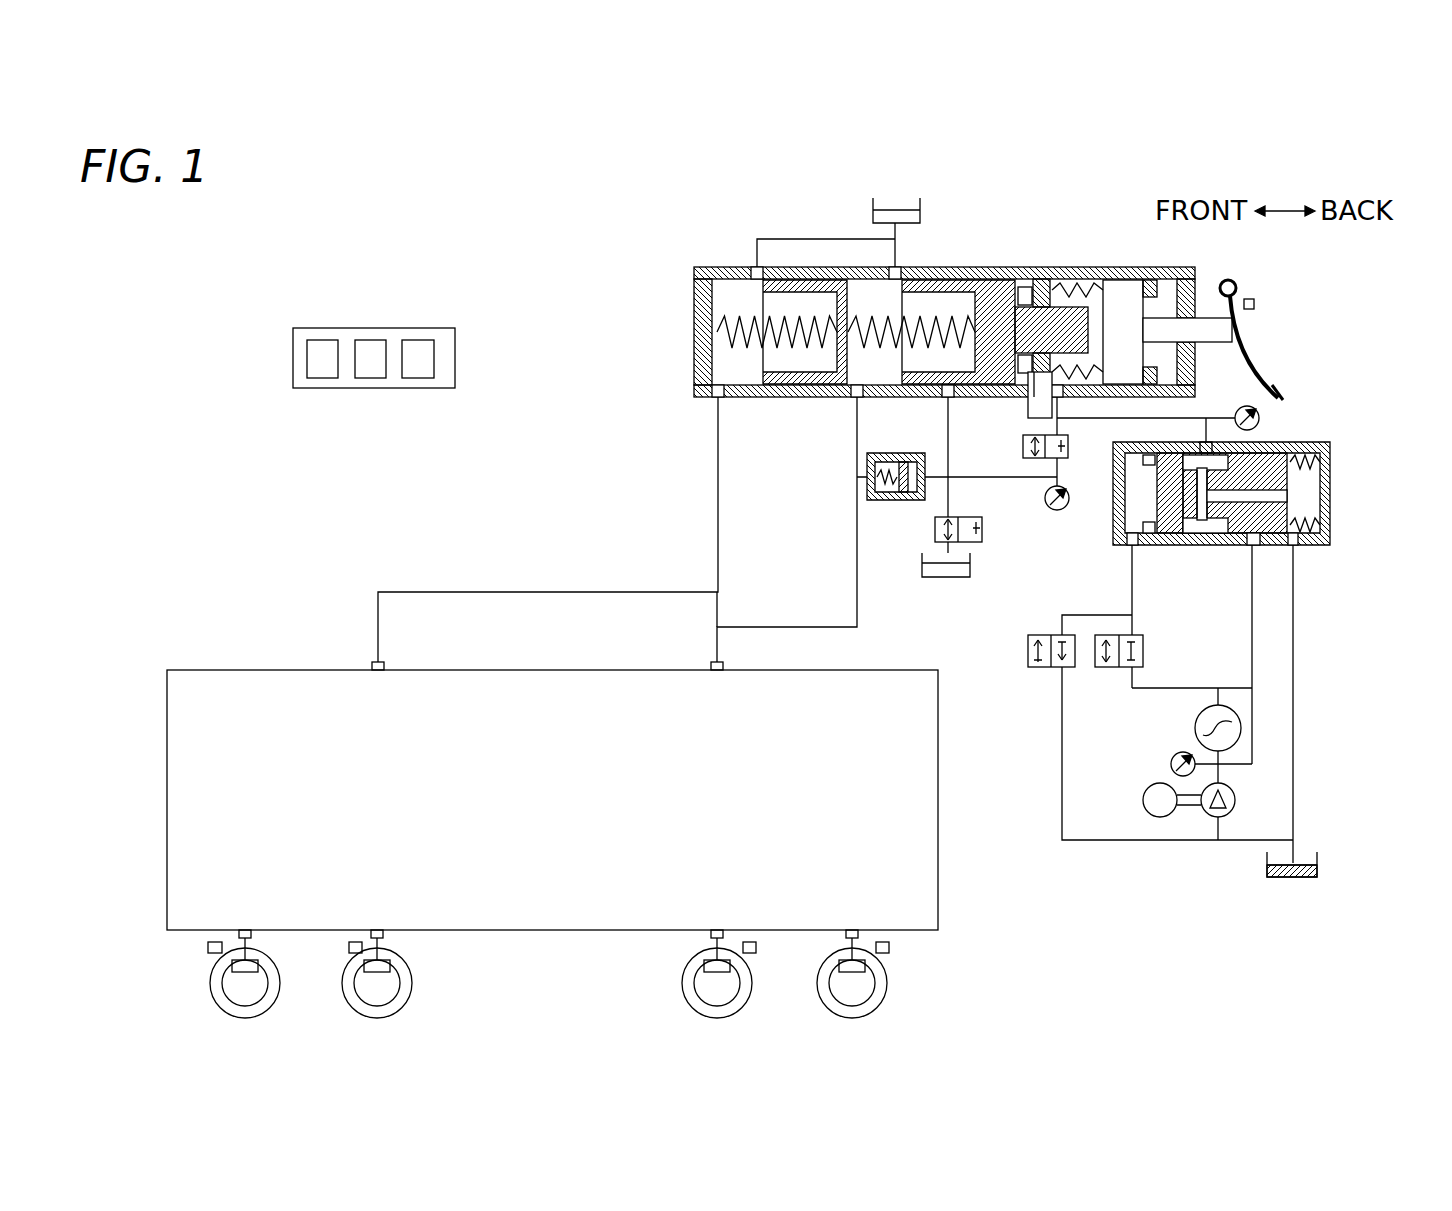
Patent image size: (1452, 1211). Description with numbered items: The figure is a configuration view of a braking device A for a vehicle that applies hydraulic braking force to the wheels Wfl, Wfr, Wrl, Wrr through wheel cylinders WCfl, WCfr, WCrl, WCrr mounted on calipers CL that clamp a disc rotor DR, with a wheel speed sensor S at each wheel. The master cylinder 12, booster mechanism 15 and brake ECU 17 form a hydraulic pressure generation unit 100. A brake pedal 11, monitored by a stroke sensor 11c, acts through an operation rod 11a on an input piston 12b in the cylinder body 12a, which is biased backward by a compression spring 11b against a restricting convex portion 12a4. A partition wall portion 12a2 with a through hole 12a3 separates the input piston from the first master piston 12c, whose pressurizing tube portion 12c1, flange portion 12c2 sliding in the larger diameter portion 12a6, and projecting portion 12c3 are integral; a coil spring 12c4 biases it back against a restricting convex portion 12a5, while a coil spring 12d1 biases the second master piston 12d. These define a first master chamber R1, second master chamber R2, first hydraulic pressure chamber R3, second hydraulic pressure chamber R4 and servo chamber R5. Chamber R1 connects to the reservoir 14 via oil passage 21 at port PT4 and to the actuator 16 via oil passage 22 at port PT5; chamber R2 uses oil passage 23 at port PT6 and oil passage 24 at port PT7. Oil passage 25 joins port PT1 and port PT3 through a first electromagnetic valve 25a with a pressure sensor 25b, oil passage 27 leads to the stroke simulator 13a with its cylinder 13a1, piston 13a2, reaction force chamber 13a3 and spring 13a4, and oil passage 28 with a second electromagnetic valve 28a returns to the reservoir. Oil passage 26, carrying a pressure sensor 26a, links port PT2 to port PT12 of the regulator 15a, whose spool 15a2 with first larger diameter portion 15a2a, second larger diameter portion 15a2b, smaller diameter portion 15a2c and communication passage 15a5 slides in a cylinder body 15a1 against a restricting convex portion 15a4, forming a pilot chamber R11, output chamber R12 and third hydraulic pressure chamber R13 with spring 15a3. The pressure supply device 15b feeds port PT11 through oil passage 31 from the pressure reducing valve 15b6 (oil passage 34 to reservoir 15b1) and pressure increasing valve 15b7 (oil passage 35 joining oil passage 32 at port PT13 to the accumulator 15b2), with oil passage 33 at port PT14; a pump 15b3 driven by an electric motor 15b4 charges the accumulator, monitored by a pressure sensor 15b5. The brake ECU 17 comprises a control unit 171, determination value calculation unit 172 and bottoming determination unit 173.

The hydraulic pressure generation unit 100 is at (1352, 400).
The braking device for a vehicle A is at (517, 230).
The brake pedal 11 is at (1243, 357).
The operation rod 11a is at (1205, 330).
The compression spring 11b is at (1080, 283).
The stroke sensor 11c is at (1255, 305).
The master cylinder 12 is at (911, 316).
The cylinder body 12a is at (694, 330).
The partition wall portion 12a2 is at (1042, 279).
The through hole 12a3 is at (1055, 270).
The restricting convex portion 12a4 is at (1155, 272).
The restricting convex portion 12a5 is at (1025, 287).
The larger diameter portion 12a6 is at (965, 283).
The input piston 12b is at (1122, 280).
The first master piston 12c is at (912, 384).
The pressurizing tube portion 12c1 is at (935, 270).
The flange portion 12c2 is at (1005, 280).
The projecting portion 12c3 is at (1105, 272).
The coil spring 12c4 is at (895, 400).
The second master piston 12d is at (805, 384).
The coil spring 12d1 is at (790, 395).
The stroke simulator 13a is at (892, 506).
The cylinder 13a1 is at (875, 482).
The piston 13a2 is at (880, 492).
The reaction force chamber 13a3 is at (890, 458).
The spring 13a4 is at (890, 470).
The reservoir 14 is at (873, 210).
The booster mechanism 15 is at (1385, 622).
The regulator 15a is at (1251, 515).
The cylinder body 15a1 is at (1322, 495).
The spool 15a2 is at (1290, 462).
The first larger diameter portion 15a2a is at (1268, 555).
The second larger diameter portion 15a2b is at (1160, 548).
The smaller diameter portion 15a2c is at (1210, 548).
The spring 15a3 is at (1310, 452).
The restricting convex portion 15a4 is at (1165, 540).
The communication passage 15a5 is at (1330, 480).
The pressure supply device 15b is at (1203, 711).
The reservoir 15b1 is at (1318, 863).
The accumulator 15b2 is at (1195, 728).
The pump 15b3 is at (1236, 800).
The electric motor 15b4 is at (1143, 800).
The pressure sensor 15b5 is at (1171, 764).
The pressure reducing valve 15b6 is at (1046, 667).
The pressure increasing valve 15b7 is at (1113, 667).
The actuator 16 is at (855, 672).
The brake ECU 17 is at (385, 328).
The control unit 171 is at (323, 364).
The determination value calculation unit 172 is at (370, 367).
The bottoming determination unit 173 is at (418, 364).
The oil passage 21 is at (893, 233).
The oil passage 22 is at (790, 627).
The oil passage 23 is at (780, 239).
The oil passage 24 is at (538, 592).
The oil passage 25 is at (1025, 477).
The first electromagnetic valve 25a is at (1068, 447).
The pressure sensor 25b is at (1066, 490).
The oil passage 26 is at (1195, 418).
The pressure sensor 26a is at (1262, 414).
The oil passage 27 is at (938, 480).
The oil passage 28 is at (958, 517).
The second electromagnetic valve 28a is at (982, 530).
The oil passage 31 is at (1130, 614).
The oil passage 32 is at (1252, 676).
The oil passage 33 is at (1295, 773).
The oil passage 34 is at (1062, 748).
The oil passage 35 is at (1180, 688).
The port PT1 is at (1060, 400).
The port PT2 is at (1030, 418).
The port PT3 is at (948, 397).
The port PT4 is at (895, 267).
The port PT5 is at (857, 397).
The port PT6 is at (756, 267).
The port PT7 is at (717, 397).
The port PT11 is at (1125, 547).
The port PT12 is at (1203, 440).
The port PT13 is at (1262, 560).
The port PT14 is at (1298, 550).
The first master chamber R1 is at (875, 385).
The second master chamber R2 is at (752, 385).
The first hydraulic pressure chamber R3 is at (1146, 406).
The second hydraulic pressure chamber R4 is at (985, 392).
The servo chamber R5 is at (1030, 385).
The pilot chamber R11 is at (1118, 522).
The output chamber R12 is at (1205, 545).
The third hydraulic pressure chamber R13 is at (1330, 520).
The wheel speed sensor S is at (207, 948).
The caliper CL is at (230, 966).
The disc rotor DR is at (223, 997).
The wheel cylinder WCrr is at (225, 980).
The wheel cylinder WCfl is at (357, 980).
The wheel cylinder WCfr is at (740, 980).
The wheel cylinder WCrl is at (882, 980).
The rear right wheel Wrr is at (232, 1012).
The front left wheel Wfl is at (364, 1012).
The front right wheel Wfr is at (730, 1012).
The rear left wheel Wrl is at (868, 1012).